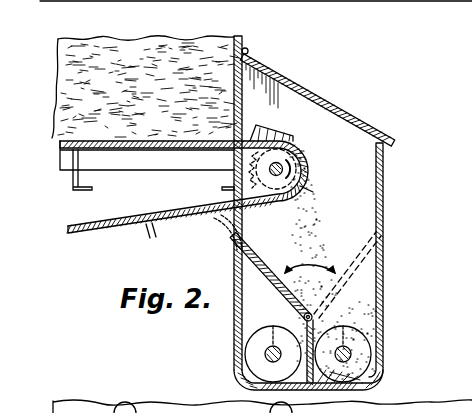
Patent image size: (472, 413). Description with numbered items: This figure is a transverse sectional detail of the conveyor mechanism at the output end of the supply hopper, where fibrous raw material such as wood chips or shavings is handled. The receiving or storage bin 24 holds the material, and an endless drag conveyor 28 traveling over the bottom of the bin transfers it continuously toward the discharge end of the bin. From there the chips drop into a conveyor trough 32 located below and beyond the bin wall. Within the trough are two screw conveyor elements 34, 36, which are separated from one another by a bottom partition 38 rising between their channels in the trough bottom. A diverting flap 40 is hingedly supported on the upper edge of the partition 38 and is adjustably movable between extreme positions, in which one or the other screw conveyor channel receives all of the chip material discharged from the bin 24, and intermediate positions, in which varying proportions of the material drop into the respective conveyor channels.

The receiving or storage bin 24 is at (215, 65).
The endless drag conveyor 28 is at (137, 138).
The conveyor trough 32 is at (383, 197).
The screw conveyor element 34 is at (362, 342).
The screw conveyor element 36 is at (258, 341).
The bottom partition 38 is at (315, 318).
The diverting flap 40 is at (264, 271).